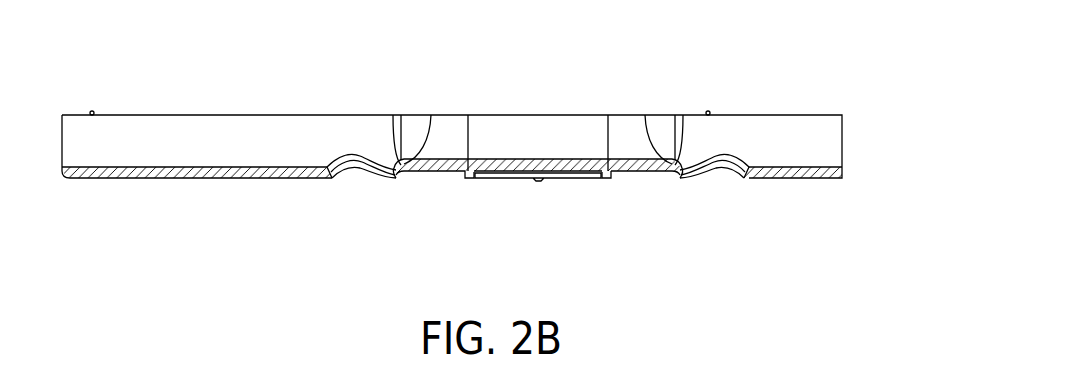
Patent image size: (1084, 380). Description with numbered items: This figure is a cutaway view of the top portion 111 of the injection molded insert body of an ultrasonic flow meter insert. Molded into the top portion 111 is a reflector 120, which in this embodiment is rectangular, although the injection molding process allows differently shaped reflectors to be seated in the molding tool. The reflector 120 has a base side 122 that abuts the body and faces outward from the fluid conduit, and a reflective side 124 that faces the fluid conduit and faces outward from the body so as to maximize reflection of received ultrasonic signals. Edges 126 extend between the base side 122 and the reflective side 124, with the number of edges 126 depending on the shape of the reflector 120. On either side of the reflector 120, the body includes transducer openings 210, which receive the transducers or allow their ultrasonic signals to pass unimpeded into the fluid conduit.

The top portion 111 is at (845, 126).
The reflector 120 is at (590, 158).
The base side 122 is at (556, 181).
The reflective side 124 is at (530, 158).
The edges 126 is at (468, 115).
The transducer openings 210 is at (362, 178).